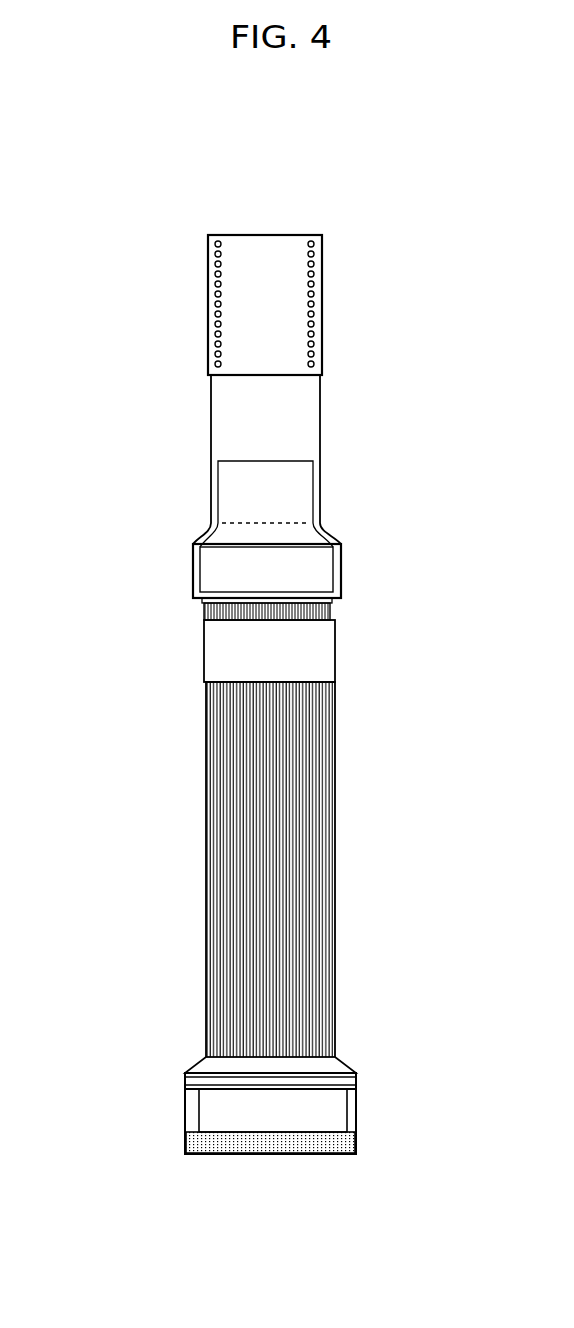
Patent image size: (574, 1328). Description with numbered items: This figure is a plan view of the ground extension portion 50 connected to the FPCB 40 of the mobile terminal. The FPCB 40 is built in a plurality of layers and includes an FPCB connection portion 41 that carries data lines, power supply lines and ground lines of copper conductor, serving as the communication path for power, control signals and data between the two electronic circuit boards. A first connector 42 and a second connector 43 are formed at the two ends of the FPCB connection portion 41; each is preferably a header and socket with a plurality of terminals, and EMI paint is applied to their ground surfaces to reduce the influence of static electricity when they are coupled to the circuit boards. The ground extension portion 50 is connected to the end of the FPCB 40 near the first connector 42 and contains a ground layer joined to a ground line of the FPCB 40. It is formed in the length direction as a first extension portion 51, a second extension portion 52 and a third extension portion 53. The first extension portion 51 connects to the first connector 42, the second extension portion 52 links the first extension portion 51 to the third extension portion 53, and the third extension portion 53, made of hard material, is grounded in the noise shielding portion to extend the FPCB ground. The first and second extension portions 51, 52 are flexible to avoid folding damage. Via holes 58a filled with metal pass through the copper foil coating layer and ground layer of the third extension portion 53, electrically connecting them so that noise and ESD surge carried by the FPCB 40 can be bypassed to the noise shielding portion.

The ground extension portion 50 is at (140, 348).
The via holes 58a is at (312, 243).
The third extension portion 53 is at (270, 305).
The second extension portion 52 is at (290, 420).
The first extension portion 51 is at (292, 490).
The FPCB 40 is at (140, 843).
The first connector 42 is at (343, 568).
The FPCB connection portion 41 is at (297, 842).
The second connector 43 is at (359, 1113).